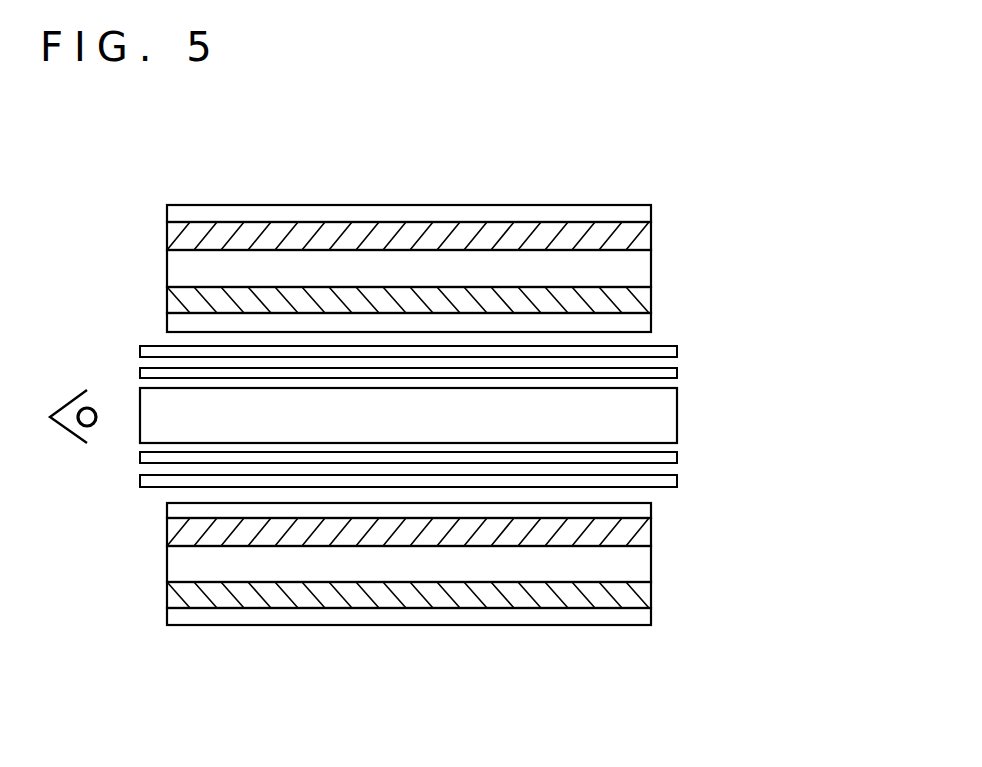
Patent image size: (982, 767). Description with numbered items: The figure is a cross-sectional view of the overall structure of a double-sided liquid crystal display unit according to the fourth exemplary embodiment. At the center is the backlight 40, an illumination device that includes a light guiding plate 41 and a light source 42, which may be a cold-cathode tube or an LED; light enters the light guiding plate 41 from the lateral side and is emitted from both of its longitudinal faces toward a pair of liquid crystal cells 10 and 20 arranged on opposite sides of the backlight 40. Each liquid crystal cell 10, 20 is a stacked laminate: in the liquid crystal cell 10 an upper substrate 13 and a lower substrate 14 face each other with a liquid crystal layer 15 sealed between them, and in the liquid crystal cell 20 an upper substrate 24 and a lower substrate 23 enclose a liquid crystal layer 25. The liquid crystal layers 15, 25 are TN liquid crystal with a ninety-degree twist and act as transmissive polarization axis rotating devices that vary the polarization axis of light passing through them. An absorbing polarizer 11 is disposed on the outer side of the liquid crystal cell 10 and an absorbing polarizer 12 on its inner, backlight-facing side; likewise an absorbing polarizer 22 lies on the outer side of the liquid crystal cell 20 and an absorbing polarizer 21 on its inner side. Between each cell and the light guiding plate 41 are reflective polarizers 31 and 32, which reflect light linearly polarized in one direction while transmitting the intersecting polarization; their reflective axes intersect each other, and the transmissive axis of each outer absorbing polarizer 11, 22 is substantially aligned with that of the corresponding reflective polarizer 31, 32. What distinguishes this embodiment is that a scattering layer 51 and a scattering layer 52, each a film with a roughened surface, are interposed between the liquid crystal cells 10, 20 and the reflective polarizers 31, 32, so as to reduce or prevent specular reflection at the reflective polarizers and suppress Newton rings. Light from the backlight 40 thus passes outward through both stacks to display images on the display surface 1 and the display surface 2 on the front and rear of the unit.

The display surface 1 is at (520, 231).
The display surface 2 is at (519, 605).
The liquid crystal cell 10 is at (520, 268).
The absorbing polarizer 11 is at (623, 213).
The absorbing polarizer 12 is at (479, 324).
The upper substrate 13 is at (623, 233).
The lower substrate 14 is at (623, 305).
The liquid crystal layer 15 is at (623, 273).
The liquid crystal cell 20 is at (519, 569).
The absorbing polarizer 21 is at (623, 508).
The absorbing polarizer 22 is at (478, 623).
The lower substrate 23 is at (623, 531).
The upper substrate 24 is at (623, 600).
The liquid crystal layer 25 is at (623, 562).
The reflective polarizer 31 is at (652, 374).
The reflective polarizer 32 is at (652, 461).
The backlight 40 is at (524, 420).
The light guiding plate 41 is at (652, 423).
The light source 42 is at (73, 439).
The scattering layer 51 is at (652, 353).
The scattering layer 52 is at (652, 482).